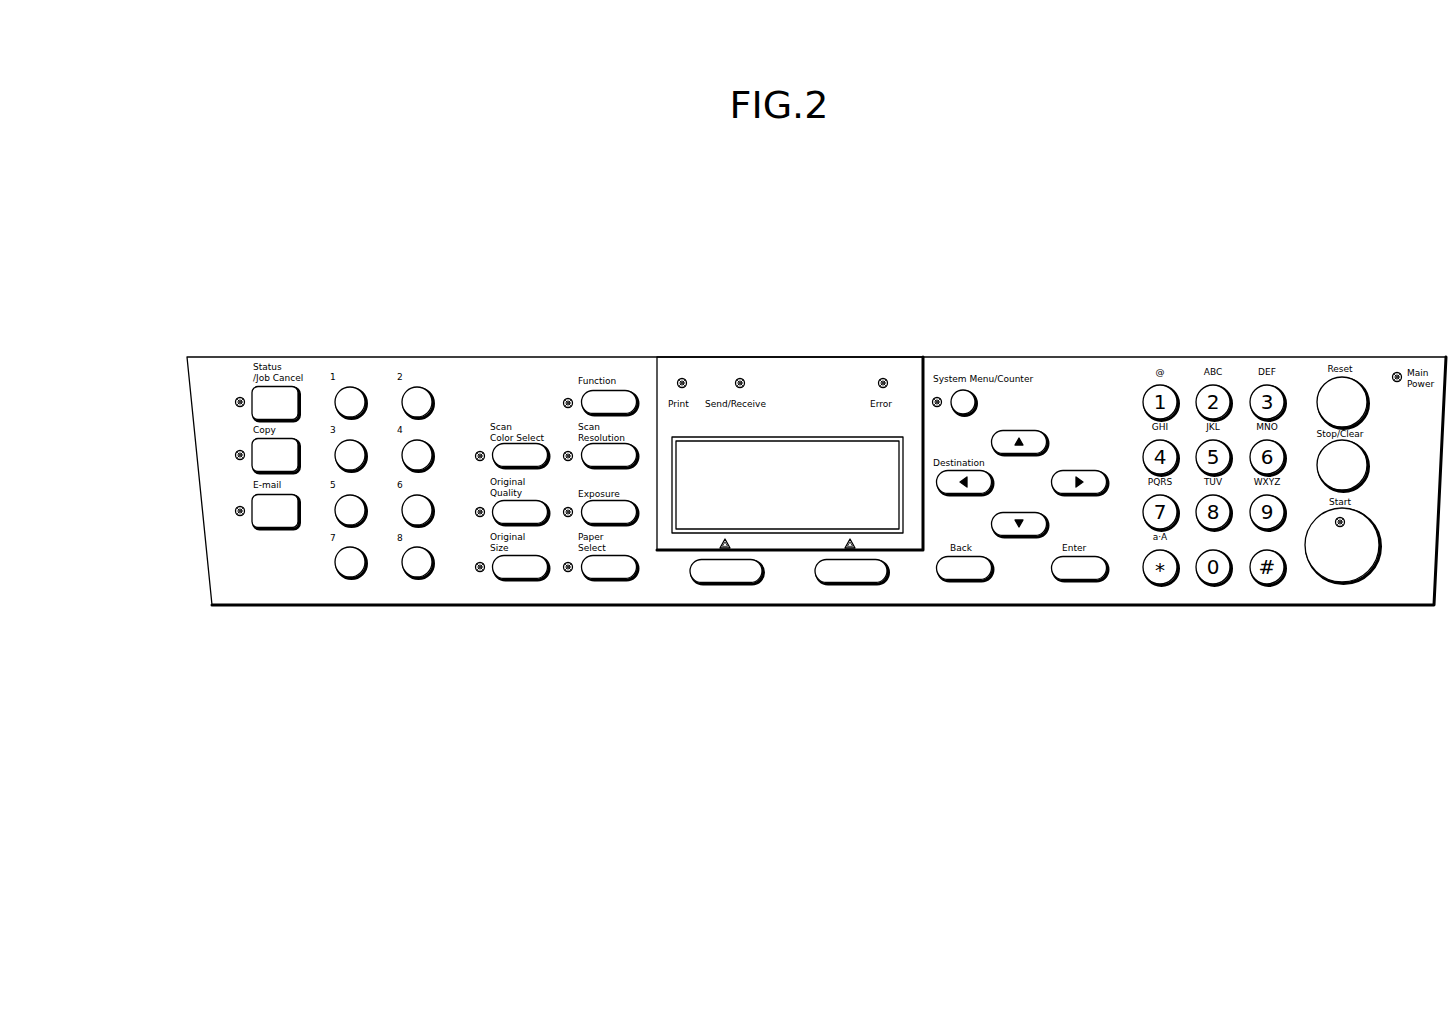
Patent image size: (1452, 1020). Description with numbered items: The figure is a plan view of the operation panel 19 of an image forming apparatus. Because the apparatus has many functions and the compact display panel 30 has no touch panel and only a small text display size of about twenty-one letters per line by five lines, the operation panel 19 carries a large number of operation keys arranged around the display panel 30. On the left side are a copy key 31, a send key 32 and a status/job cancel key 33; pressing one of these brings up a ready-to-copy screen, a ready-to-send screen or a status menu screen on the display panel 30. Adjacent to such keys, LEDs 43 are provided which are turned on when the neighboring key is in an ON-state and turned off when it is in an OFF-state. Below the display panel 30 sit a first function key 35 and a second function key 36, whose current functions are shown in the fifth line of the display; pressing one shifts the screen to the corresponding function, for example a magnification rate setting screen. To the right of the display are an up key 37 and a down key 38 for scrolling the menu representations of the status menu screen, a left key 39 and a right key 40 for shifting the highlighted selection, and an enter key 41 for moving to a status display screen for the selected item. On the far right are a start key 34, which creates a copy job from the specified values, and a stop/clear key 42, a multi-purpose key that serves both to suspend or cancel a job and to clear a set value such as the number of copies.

The operation panel 19 is at (789, 348).
The display panel 30 is at (784, 437).
The copy key 31 is at (252, 451).
The send key 32 is at (252, 506).
The status/job cancel key 33 is at (252, 396).
The start key 34 is at (1380, 546).
The first function key 35 is at (723, 585).
The second function key 36 is at (848, 585).
The up key 37 is at (1016, 431).
The down key 38 is at (1017, 536).
The left key 39 is at (962, 494).
The right key 40 is at (1074, 472).
The enter key 41 is at (1078, 580).
The stop/clear key 42 is at (1368, 461).
The LEDs 43 is at (235, 511).